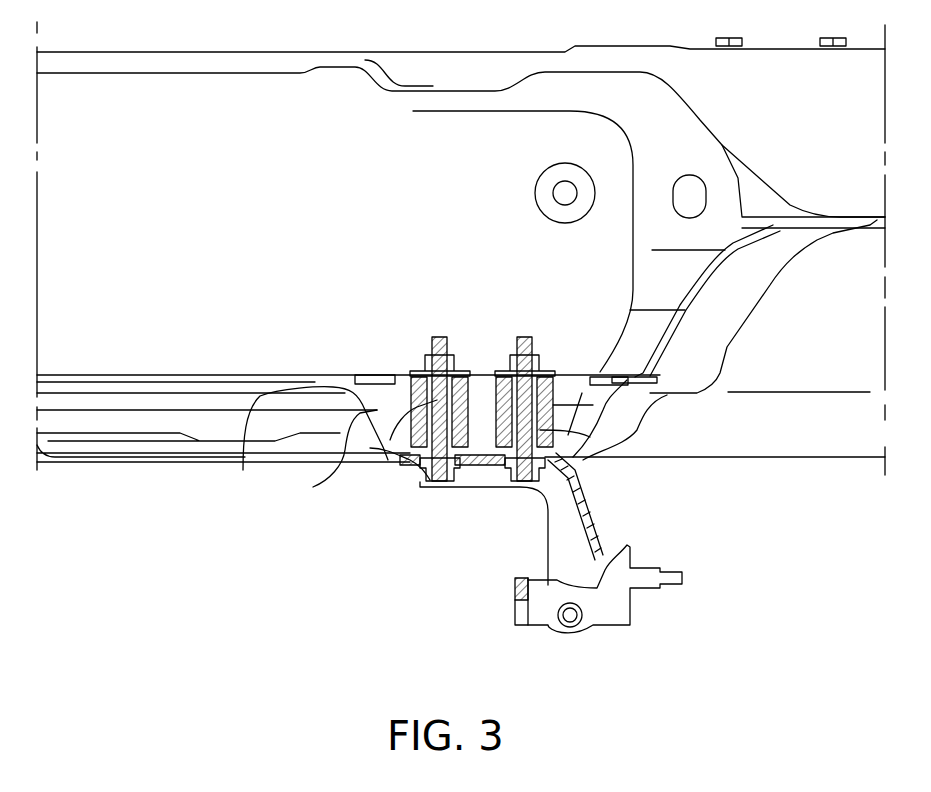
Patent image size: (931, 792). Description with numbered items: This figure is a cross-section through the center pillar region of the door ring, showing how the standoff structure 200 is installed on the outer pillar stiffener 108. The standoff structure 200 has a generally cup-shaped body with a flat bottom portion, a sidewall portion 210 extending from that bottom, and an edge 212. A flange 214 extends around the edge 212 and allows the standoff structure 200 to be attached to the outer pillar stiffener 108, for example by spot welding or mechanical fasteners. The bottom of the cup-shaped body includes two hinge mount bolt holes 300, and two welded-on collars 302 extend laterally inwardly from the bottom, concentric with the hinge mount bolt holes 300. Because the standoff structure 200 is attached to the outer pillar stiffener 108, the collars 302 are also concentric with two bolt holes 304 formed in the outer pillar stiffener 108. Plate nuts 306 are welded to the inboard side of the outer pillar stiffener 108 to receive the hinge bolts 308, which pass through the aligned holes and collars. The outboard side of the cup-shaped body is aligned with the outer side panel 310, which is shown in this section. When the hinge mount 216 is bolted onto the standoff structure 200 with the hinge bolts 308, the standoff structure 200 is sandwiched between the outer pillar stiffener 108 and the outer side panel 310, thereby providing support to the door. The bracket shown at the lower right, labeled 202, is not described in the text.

The outer pillar stiffener 108 is at (323, 368).
The standoff structure 200 is at (648, 425).
The bracket 202 is at (610, 612).
The sidewall portion 210 is at (313, 487).
The edge 212 is at (243, 470).
The flange 214 is at (368, 372).
The hinge mount 216 is at (590, 470).
The hinge mount bolt holes 300 is at (485, 488).
The collars 302 is at (420, 465).
The bolt holes 304 is at (455, 370).
The plate nuts 306 is at (416, 370).
The hinge bolts 308 is at (388, 465).
The outer side panel 310 is at (282, 466).